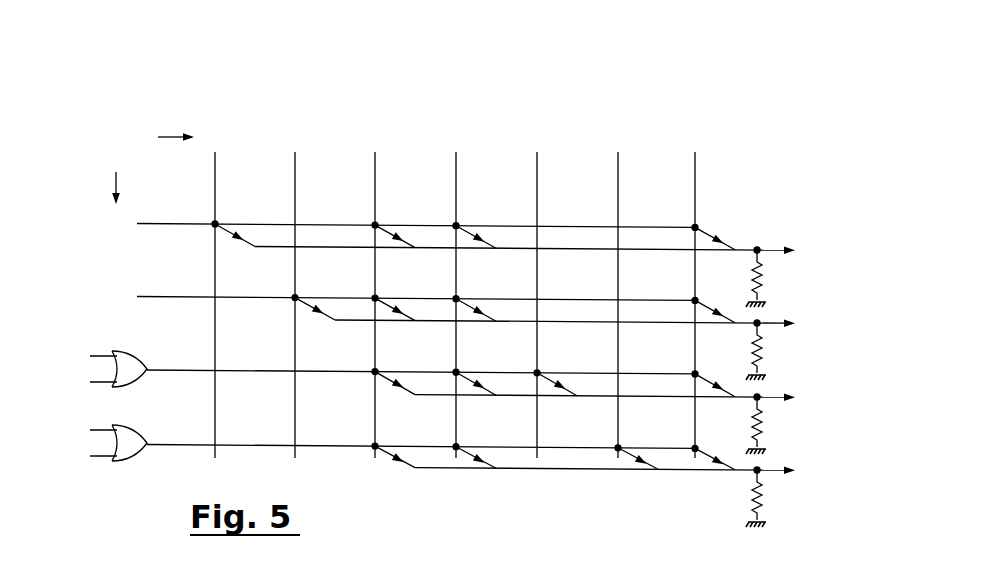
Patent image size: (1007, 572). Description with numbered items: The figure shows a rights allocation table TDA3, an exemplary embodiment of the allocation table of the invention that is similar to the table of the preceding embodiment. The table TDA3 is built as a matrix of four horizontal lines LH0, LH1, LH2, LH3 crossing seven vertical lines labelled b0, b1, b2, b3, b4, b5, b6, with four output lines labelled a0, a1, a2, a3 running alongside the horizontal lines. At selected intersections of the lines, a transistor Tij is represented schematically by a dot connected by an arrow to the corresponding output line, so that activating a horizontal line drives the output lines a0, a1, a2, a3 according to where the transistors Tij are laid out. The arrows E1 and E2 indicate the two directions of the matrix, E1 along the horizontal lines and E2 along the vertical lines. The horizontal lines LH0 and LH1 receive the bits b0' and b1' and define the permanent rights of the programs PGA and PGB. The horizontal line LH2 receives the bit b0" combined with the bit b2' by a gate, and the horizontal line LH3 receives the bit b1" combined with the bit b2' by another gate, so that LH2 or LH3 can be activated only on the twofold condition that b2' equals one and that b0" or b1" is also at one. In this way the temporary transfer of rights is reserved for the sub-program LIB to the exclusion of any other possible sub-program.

The rights allocation table TDA3 is at (669, 84).
The horizontal line LH0 is at (156, 223).
The horizontal line LH1 is at (156, 297).
The horizontal line LH2 is at (163, 370).
The horizontal line LH3 is at (163, 444).
The transistor Tij is at (379, 298).
The row input direction E1 is at (115, 174).
The column input direction E2 is at (160, 135).
The column line b0 is at (216, 265).
The column line b1 is at (296, 265).
The column line b2 is at (374, 265).
The column line b3 is at (459, 279).
The column line b4 is at (539, 279).
The column line b5 is at (619, 279).
The column line b6 is at (697, 279).
The output line a0 is at (538, 272).
The output line a1 is at (578, 345).
The output line a2 is at (618, 419).
The output line a3 is at (618, 492).